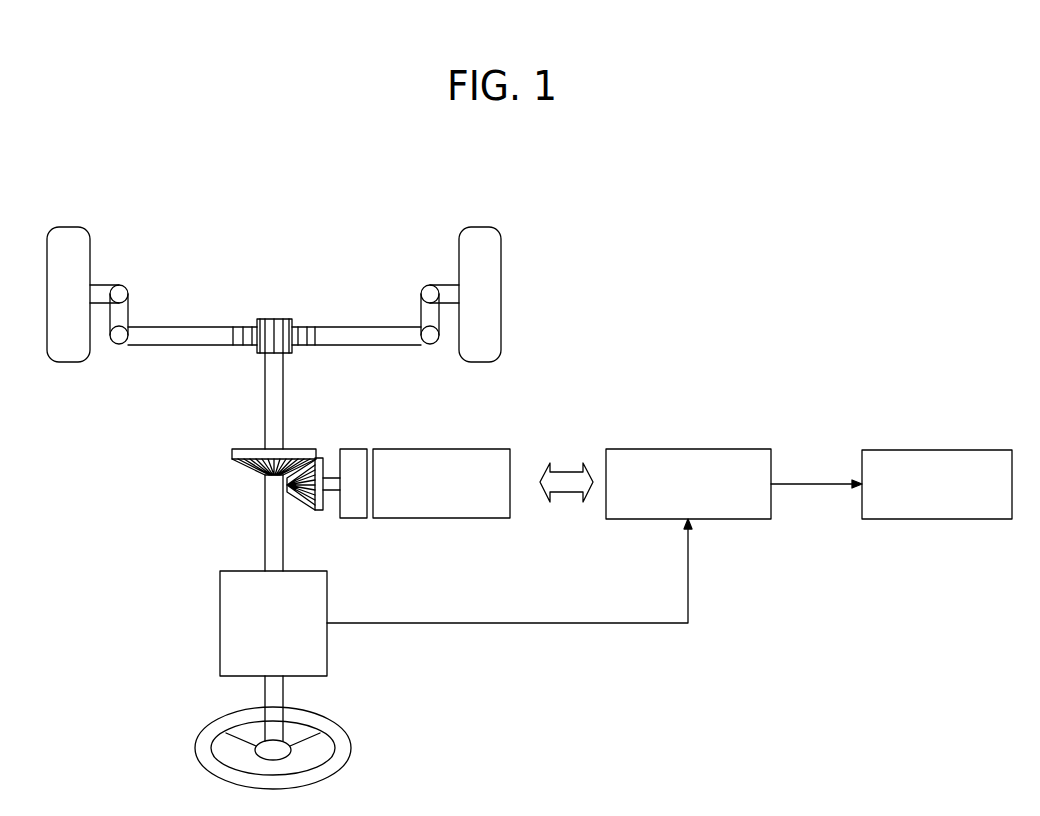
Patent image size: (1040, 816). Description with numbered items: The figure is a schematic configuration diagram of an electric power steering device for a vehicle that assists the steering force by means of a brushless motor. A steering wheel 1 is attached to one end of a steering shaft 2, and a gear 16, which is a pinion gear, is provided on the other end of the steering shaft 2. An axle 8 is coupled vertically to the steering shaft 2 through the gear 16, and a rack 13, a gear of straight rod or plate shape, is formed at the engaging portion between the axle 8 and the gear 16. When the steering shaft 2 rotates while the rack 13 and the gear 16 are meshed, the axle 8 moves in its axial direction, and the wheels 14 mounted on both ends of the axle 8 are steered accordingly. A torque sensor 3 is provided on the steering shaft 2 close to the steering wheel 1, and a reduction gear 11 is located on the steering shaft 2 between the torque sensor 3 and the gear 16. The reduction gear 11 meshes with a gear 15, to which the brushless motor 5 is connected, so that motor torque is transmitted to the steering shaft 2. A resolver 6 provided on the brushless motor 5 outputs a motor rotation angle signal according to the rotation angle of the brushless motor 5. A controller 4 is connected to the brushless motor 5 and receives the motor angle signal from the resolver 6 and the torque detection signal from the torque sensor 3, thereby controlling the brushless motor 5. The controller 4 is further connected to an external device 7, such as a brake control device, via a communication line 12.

The steering wheel 1 is at (353, 738).
The steering shaft 2 is at (265, 550).
The torque sensor 3 is at (220, 637).
The controller 4 is at (760, 520).
The brushless motor 5 is at (430, 449).
The resolver 6 is at (357, 449).
The external device 7 is at (910, 450).
The axle 8 is at (373, 327).
The reduction gear 11 is at (245, 449).
The communication line 12 is at (813, 482).
The rack 13 is at (303, 327).
The wheels 14 is at (75, 227).
The gear 15 is at (310, 508).
The gear 16 is at (258, 319).